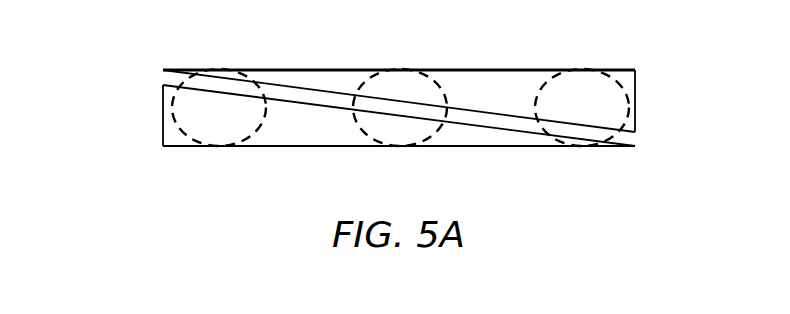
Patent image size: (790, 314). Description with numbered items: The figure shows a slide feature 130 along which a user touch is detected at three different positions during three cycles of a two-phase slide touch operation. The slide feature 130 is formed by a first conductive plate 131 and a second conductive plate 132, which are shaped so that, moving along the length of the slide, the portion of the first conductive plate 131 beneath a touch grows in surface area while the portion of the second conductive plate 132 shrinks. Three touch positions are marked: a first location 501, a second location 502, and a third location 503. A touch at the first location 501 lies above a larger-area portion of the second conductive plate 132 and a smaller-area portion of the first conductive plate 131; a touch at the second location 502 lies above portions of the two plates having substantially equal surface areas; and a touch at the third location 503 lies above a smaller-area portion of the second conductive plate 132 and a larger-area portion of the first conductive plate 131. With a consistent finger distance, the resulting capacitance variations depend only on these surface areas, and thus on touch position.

The slide feature 130 is at (114, 58).
The first conductive plate 131 is at (637, 83).
The second conductive plate 132 is at (162, 135).
The first location 501 is at (261, 128).
The second location 502 is at (440, 128).
The third location 503 is at (537, 97).